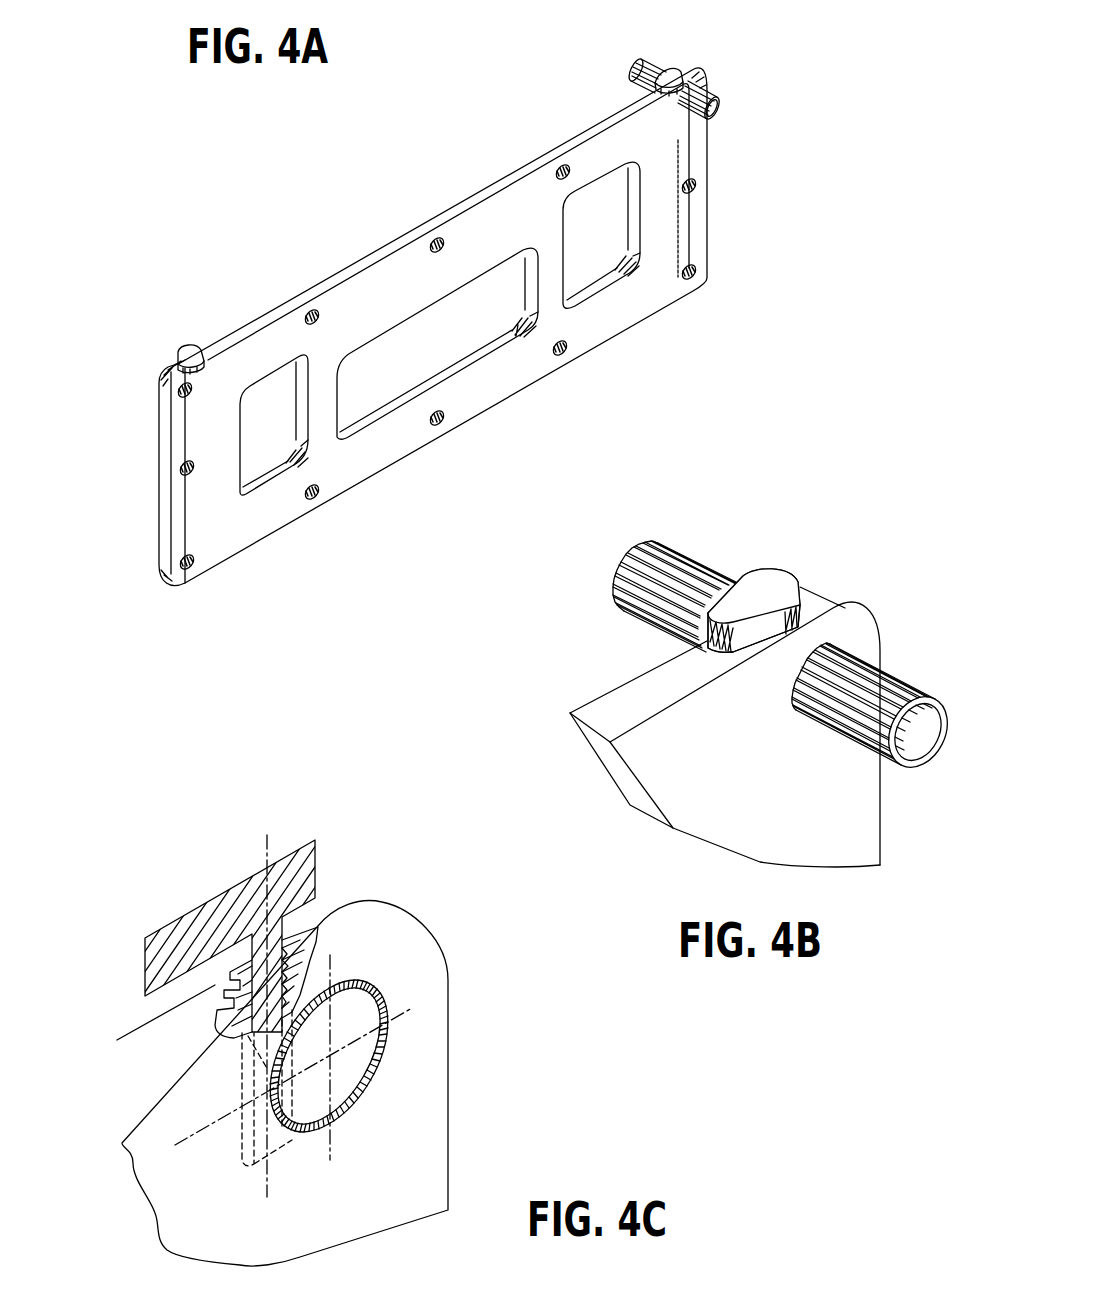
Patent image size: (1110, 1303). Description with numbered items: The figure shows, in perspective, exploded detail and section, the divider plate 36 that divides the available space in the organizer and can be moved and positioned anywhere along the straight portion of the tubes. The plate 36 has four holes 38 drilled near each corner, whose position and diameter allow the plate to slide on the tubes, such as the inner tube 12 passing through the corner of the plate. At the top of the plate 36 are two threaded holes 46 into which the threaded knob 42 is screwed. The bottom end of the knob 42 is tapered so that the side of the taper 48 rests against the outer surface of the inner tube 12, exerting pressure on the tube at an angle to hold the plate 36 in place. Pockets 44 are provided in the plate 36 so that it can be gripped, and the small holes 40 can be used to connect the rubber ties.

In FIG. 4A, the inner tube 12 is at (640, 62).
In FIG. 4B, the inner tube 12 is at (692, 563).
In FIG. 4C, the inner tube 12 is at (358, 1080).
In FIG. 4A, the plate 36 is at (500, 178).
In FIG. 4B, the plate 36 is at (620, 703).
In FIG. 4C, the plate 36 is at (137, 1065).
In FIG. 4A, the holes 38 is at (187, 572).
In FIG. 4A, the small holes 40 is at (310, 312).
In FIG. 4A, the knob 42 is at (183, 348).
In FIG. 4B, the knob 42 is at (777, 585).
In FIG. 4C, the knob 42 is at (235, 895).
In FIG. 4A, the pockets 44 is at (457, 370).
In FIG. 4C, the threaded holes 46 is at (318, 942).
In FIG. 4C, the taper 48 is at (273, 1048).